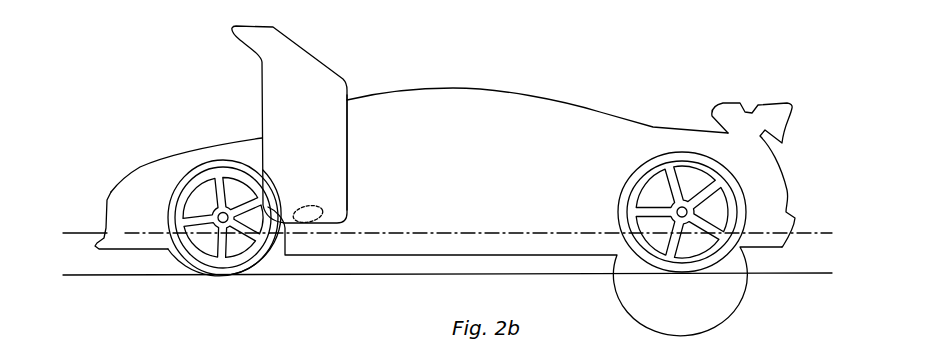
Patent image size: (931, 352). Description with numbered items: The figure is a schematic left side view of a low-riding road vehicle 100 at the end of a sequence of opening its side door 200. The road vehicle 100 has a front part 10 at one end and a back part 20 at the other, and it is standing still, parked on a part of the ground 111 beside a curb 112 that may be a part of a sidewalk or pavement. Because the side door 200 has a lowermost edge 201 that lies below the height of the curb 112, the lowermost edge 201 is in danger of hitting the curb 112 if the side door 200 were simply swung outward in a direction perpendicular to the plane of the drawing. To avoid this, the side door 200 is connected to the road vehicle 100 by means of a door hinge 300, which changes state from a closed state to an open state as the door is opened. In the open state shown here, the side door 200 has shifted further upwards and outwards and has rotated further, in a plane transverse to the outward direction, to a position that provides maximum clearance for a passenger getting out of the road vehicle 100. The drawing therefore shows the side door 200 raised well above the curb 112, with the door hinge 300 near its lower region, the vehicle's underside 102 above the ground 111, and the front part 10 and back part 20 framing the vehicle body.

The front part 10 is at (100, 190).
The back part 20 is at (791, 190).
The road vehicle 100 is at (561, 100).
The underside of vehicle body 102 is at (297, 257).
The ground 111 is at (85, 276).
The curb 112 is at (75, 232).
The side door 200 is at (310, 50).
The lowermost edge 201 is at (348, 140).
The door hinge 300 is at (323, 208).